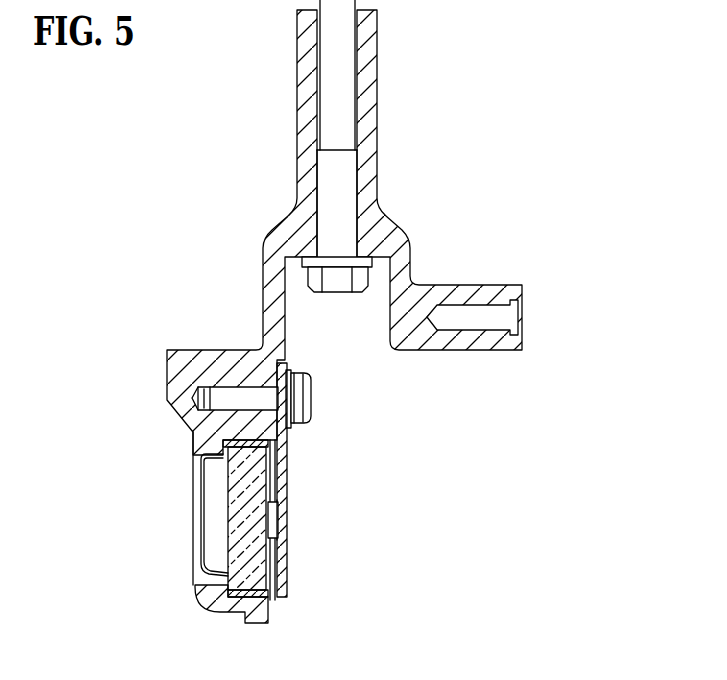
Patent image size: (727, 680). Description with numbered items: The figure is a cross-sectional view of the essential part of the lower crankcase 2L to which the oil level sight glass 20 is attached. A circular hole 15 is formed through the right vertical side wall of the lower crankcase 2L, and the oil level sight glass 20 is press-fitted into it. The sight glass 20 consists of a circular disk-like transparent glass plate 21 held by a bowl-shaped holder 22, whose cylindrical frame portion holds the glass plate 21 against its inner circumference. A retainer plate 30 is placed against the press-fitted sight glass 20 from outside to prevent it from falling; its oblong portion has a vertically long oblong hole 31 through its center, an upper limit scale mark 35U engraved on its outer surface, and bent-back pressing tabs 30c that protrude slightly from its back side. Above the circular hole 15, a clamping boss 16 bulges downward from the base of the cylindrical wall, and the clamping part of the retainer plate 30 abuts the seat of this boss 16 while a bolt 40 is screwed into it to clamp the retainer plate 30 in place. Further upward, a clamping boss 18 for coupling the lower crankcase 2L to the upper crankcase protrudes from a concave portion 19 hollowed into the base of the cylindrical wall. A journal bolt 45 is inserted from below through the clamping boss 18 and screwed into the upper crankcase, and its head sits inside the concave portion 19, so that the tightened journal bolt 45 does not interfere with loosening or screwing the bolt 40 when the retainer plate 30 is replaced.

The lower crankcase 2L is at (440, 186).
The circular hole 15 is at (195, 569).
The clamping boss 16 is at (228, 351).
The clamping boss 18 is at (378, 128).
The concave portion 19 is at (352, 343).
The oil level sight glass 20 is at (98, 444).
The transparent glass plate 21 is at (245, 512).
The holder 22 is at (202, 456).
The retainer plate 30 is at (291, 590).
The pressing tabs 30c is at (273, 525).
The oblong hole 31 is at (284, 517).
The upper limit scale mark 35U is at (287, 478).
The bolt 40 is at (312, 399).
The journal bolt 45 is at (343, 224).